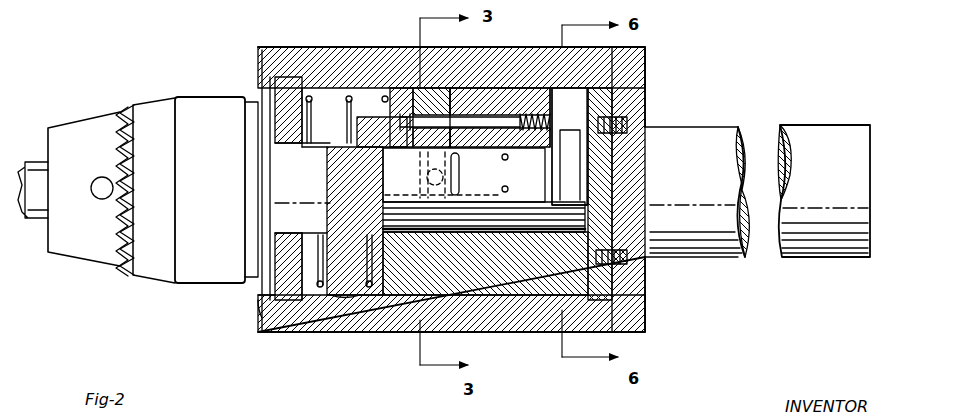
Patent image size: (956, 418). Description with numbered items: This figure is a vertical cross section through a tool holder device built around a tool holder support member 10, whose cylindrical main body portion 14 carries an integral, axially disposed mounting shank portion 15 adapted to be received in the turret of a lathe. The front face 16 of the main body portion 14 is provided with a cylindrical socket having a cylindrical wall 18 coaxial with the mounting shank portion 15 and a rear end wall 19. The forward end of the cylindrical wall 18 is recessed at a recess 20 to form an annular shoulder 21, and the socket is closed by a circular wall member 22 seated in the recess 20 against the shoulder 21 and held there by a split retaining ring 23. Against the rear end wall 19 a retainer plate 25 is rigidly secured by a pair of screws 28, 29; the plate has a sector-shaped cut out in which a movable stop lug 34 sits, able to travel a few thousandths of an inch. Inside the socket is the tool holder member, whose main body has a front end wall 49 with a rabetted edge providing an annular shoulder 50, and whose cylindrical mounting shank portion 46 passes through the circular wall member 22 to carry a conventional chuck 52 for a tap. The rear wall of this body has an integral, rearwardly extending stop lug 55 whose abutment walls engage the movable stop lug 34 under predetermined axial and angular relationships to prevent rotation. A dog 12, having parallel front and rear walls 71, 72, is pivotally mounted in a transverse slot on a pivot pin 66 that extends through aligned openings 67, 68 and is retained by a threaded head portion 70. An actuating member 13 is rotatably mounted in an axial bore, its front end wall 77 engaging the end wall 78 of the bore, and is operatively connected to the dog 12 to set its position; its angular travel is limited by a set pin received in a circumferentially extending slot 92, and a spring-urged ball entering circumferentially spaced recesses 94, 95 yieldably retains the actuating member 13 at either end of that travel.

The tool holder support member 10 is at (292, 44).
The dog 12 is at (436, 90).
The actuating member 13 is at (460, 245).
The cylindrical main body portion 14 is at (360, 47).
The mounting shank portion 15 is at (838, 187).
The front face 16 is at (258, 316).
The cylindrical wall 18 is at (420, 296).
The rear end wall 19 is at (605, 198).
The recess 20 is at (272, 292).
The annular shoulder 21 is at (283, 330).
The circular wall member 22 is at (278, 92).
The split retaining ring 23 is at (258, 80).
The retainer plate 25 is at (610, 148).
The screw 28 is at (627, 124).
The screw 29 is at (622, 262).
The movable stop lug 34 is at (575, 178).
The mounting shank portion 46 is at (312, 193).
The front end wall 49 is at (360, 260).
The annular shoulder 50 is at (388, 297).
The chuck 52 is at (213, 190).
The stop lug 55 is at (572, 250).
The pivot pin 66 is at (541, 90).
The opening 67 is at (482, 124).
The opening 68 is at (346, 120).
The threaded head portion 70 is at (572, 124).
The front wall 71 is at (400, 88).
The rear wall 72 is at (465, 90).
The front end wall 77 is at (386, 160).
The end wall 78 is at (302, 177).
The circumferentially extending slot 92 is at (460, 178).
The recess 94 is at (507, 160).
The recess 95 is at (508, 189).